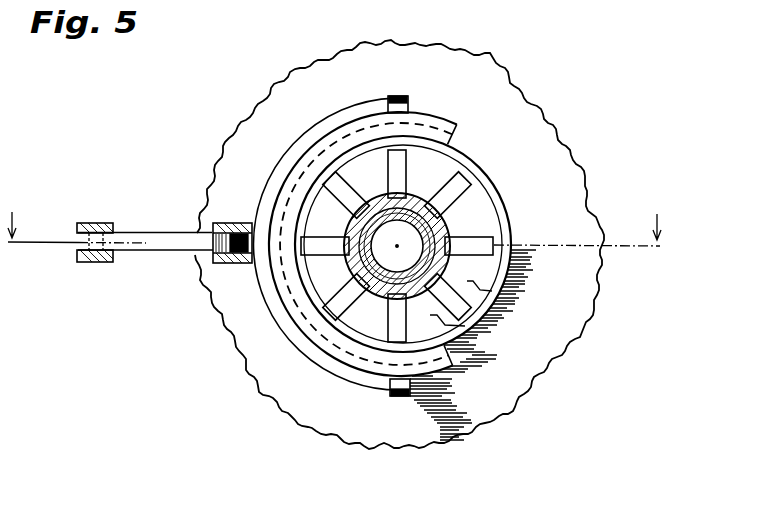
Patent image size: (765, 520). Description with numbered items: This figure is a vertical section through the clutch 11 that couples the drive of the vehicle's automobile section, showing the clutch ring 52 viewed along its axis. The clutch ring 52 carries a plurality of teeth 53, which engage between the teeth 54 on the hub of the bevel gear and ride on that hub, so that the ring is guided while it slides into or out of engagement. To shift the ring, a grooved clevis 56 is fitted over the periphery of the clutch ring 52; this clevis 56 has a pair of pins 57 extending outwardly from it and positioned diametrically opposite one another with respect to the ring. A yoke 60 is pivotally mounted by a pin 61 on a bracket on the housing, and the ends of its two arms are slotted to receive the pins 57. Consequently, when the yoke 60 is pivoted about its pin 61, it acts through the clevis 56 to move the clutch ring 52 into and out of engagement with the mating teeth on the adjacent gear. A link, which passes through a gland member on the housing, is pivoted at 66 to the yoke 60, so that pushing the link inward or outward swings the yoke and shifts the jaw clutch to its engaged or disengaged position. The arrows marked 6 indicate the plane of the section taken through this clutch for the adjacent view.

The Figure 6 section line 6 is at (344, 233).
The clutch 11 is at (427, 113).
The clutch ring 52 is at (485, 203).
The teeth 53 is at (513, 298).
The teeth 54 is at (400, 168).
The grooved clevis 56 is at (329, 147).
The pins 57 is at (403, 97).
The yoke 60 is at (163, 229).
The pin 61 is at (212, 258).
The pivot 66 is at (78, 249).